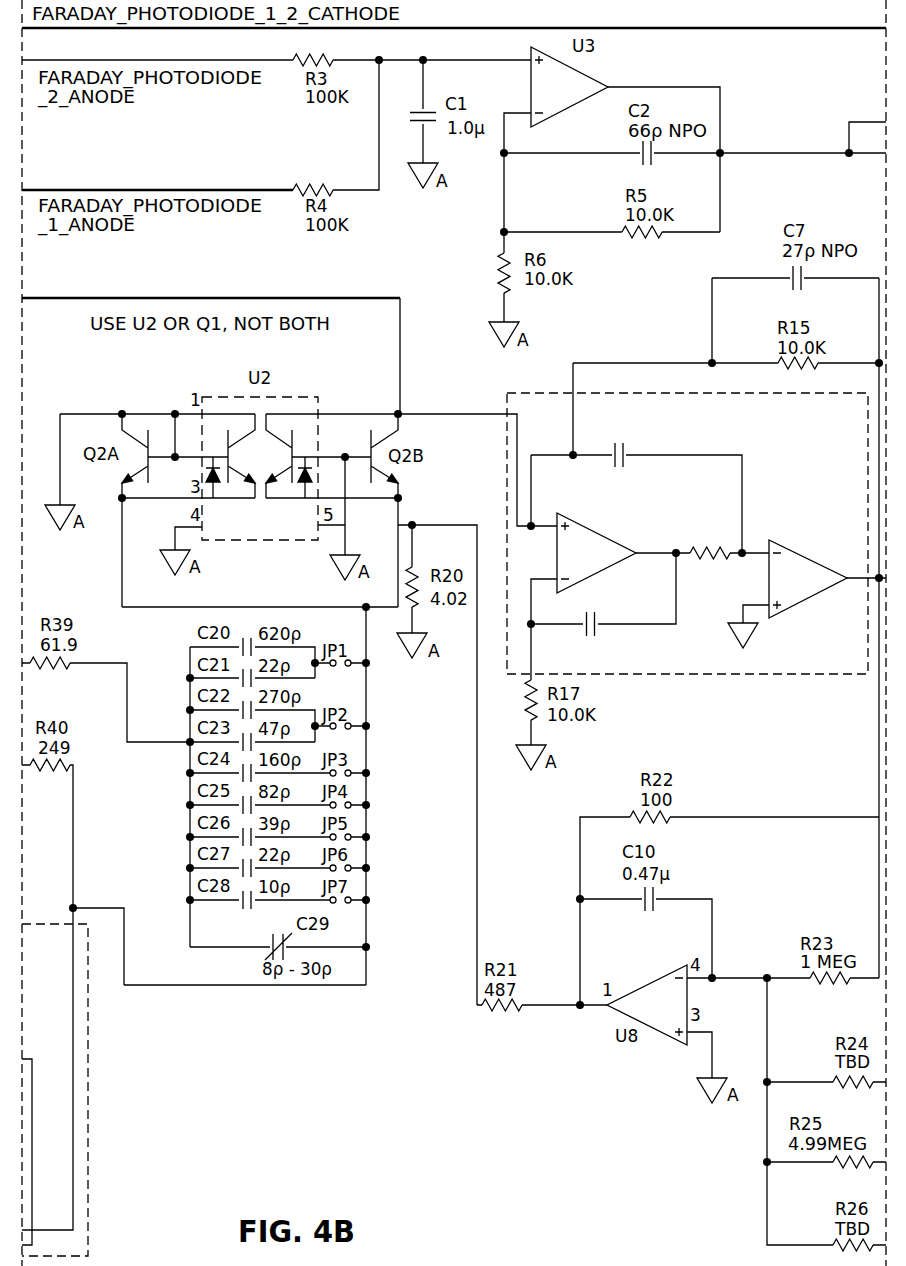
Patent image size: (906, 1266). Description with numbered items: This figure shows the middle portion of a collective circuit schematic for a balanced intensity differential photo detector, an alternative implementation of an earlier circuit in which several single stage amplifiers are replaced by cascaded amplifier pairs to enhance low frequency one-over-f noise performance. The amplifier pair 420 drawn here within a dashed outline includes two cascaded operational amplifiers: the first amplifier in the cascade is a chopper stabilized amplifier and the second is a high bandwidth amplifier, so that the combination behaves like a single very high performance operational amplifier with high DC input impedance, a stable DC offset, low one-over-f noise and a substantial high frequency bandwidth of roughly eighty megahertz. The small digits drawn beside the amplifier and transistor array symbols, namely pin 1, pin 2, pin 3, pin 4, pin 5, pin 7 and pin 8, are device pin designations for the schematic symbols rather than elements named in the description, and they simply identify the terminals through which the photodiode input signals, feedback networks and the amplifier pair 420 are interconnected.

The amplifier pair 420 is at (698, 682).
The op-amp U3 output pin 1 is at (664, 108).
The op-amp U3 non-inverting input pin 3 is at (432, 47).
The op-amp U3 inverting input pin 4 is at (517, 121).
The U2 pin 2 base connection 2 is at (188, 446).
The U2 pin 5 collector connection 5 is at (332, 402).
The U2 pin 7 base connection 7 is at (331, 446).
The U2 pin 8 emitter connection 8 is at (332, 487).